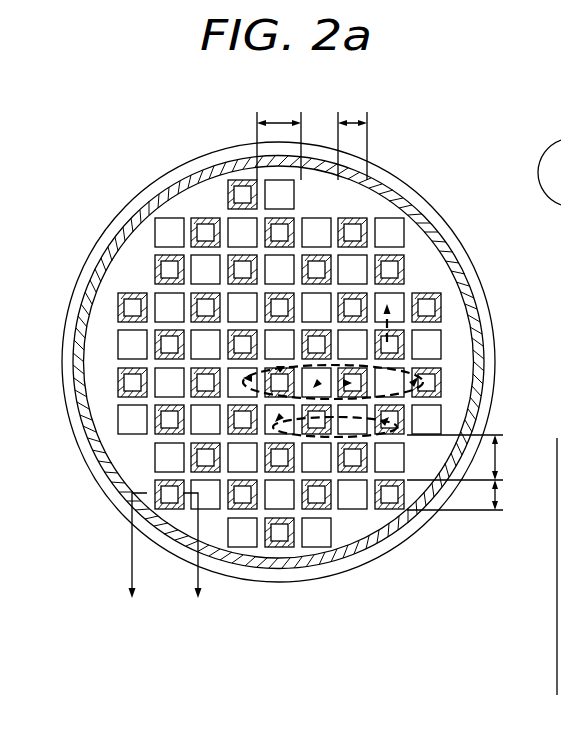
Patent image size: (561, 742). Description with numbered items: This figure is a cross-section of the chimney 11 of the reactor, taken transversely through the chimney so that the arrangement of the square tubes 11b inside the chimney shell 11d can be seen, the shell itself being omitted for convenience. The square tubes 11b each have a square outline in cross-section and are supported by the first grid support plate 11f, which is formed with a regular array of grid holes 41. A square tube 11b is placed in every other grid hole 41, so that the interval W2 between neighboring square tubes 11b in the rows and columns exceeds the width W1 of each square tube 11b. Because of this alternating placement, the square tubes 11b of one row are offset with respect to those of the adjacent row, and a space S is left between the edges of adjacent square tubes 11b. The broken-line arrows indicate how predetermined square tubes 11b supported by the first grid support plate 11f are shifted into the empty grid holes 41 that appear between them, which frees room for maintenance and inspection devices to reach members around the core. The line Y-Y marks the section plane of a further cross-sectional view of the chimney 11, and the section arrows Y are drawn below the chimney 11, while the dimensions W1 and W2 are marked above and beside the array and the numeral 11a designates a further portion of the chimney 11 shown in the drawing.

The semiconductor wafer 11 is at (136, 147).
The chip region 11a is at (203, 232).
The chip region 11b is at (238, 182).
The peripheral edge region of wafer 11d is at (352, 552).
The chip region 11f is at (277, 549).
The dicing street / frame region 41 is at (400, 268).
The scanning path S is at (409, 361).
The chip width W1 is at (439, 299).
The chip pitch W2 is at (398, 284).
The Y direction Y is at (163, 561).